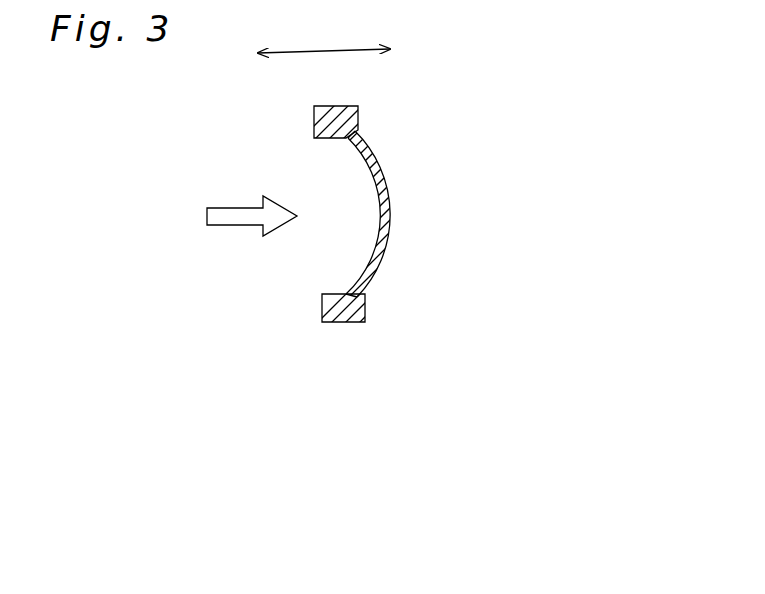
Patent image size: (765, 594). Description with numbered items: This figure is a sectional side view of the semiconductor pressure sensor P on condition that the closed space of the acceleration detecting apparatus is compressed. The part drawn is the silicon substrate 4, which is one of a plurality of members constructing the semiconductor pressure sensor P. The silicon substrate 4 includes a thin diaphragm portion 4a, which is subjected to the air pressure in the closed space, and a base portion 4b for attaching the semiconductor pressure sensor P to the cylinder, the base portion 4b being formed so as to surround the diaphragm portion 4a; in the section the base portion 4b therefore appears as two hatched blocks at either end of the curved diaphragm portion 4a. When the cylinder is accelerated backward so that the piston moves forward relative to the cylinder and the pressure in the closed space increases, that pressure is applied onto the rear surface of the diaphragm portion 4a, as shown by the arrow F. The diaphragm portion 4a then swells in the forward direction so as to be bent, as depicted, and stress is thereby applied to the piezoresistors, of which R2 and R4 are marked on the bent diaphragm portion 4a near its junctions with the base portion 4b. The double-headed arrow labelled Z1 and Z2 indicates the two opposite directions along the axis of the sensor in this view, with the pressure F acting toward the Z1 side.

The silicon substrate 4 is at (399, 246).
The diaphragm portion 4a is at (388, 206).
The base portion 4b is at (333, 318).
The piezoresistor R2 is at (367, 150).
The piezoresistor R4 is at (370, 282).
The arrow F is at (225, 208).
The semiconductor pressure sensor P is at (505, 167).
The Z1 direction Z1 is at (420, 48).
The Z2 direction Z2 is at (215, 54).